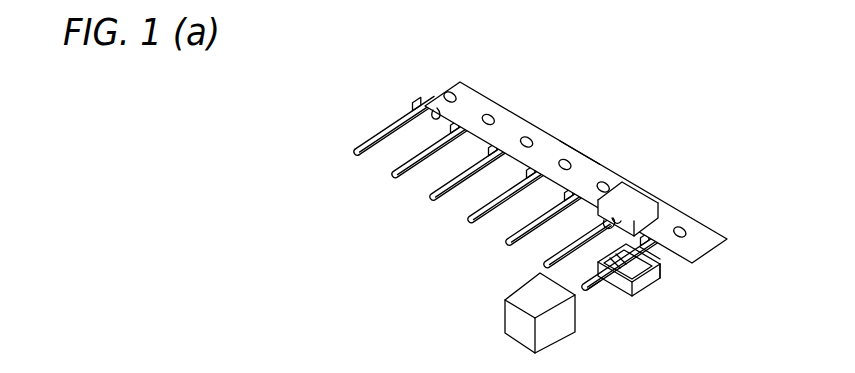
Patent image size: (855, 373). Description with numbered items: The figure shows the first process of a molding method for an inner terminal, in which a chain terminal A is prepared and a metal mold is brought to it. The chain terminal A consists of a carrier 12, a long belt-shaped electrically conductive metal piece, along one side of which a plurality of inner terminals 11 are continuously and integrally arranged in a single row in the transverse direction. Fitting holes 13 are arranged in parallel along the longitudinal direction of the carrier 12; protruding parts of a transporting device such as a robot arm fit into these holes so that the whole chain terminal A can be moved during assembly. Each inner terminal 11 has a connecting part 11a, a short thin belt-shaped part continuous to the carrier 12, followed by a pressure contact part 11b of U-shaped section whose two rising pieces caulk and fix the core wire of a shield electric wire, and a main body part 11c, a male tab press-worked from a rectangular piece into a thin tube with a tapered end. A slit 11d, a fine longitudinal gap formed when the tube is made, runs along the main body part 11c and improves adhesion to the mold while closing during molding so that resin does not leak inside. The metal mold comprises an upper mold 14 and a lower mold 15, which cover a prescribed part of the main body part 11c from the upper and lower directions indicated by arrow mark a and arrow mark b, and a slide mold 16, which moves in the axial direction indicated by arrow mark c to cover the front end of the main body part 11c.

The inner terminal 11 is at (441, 10).
The connecting part 11a is at (436, 115).
The pressure contact part 11b is at (419, 106).
The main body part 11c is at (396, 127).
The slit 11d is at (364, 142).
The carrier 12 is at (498, 100).
The fitting holes 13 is at (532, 140).
The chain terminal A is at (612, 168).
The upper mold 14 is at (650, 210).
The arrow mark a is at (618, 240).
The arrow mark b is at (661, 279).
The arrow mark c is at (580, 267).
The lower mold 15 is at (648, 292).
The slide mold 16 is at (505, 318).